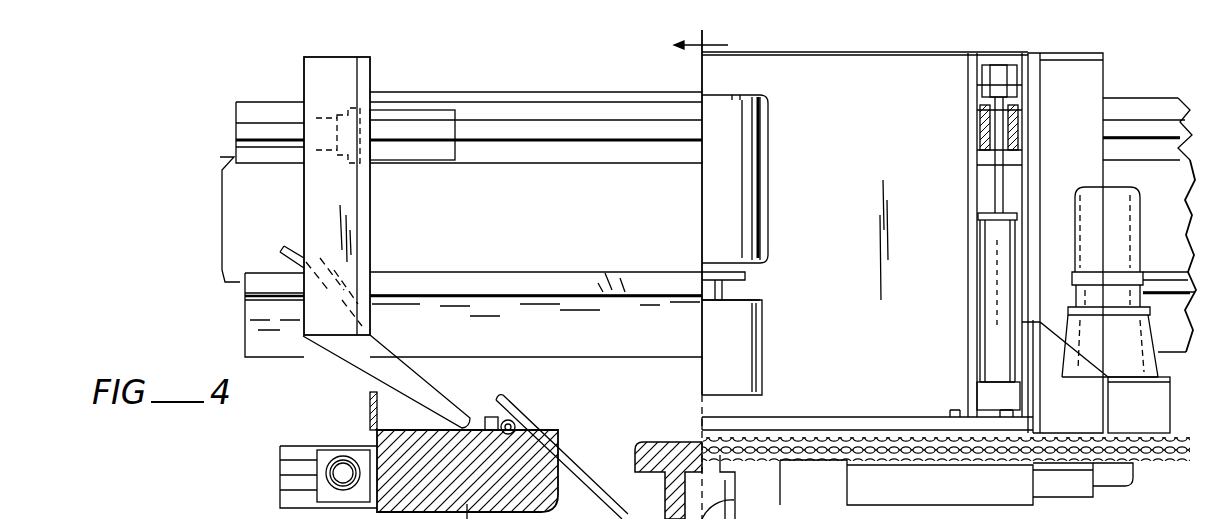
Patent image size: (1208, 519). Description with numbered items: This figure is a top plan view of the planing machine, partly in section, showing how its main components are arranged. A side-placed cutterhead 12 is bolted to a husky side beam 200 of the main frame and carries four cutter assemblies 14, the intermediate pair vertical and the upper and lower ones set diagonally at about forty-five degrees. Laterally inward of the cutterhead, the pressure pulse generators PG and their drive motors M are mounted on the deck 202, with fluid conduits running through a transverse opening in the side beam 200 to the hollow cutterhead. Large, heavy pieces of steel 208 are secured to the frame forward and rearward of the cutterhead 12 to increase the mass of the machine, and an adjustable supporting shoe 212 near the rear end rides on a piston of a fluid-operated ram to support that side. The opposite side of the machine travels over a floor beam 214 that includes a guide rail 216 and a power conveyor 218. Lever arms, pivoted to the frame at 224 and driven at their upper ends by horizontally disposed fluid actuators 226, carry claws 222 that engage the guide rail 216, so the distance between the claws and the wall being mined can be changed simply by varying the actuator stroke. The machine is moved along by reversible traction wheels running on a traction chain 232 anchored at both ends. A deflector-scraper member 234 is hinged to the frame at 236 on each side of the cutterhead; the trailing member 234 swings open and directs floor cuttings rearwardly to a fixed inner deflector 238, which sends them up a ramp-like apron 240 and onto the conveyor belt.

The cutterhead 12 is at (650, 441).
The cutter assemblies 14 is at (742, 518).
The side beam 200 is at (818, 432).
The deck 202 is at (875, 144).
The pieces of steel 208 is at (868, 480).
The adjustable supporting shoe 212 is at (1118, 496).
The floor beam 214 is at (258, 322).
The guide rail 216 is at (250, 124).
The power conveyor 218 is at (222, 196).
The claws 222 is at (450, 161).
The pivot 224 is at (968, 114).
The fluid actuators 226 is at (990, 306).
The traction chain 232 is at (1140, 458).
The deflector-scraper member 234 is at (588, 474).
The hinge connection 236 is at (516, 425).
The fixed inner deflector 238 is at (434, 392).
The ramp-like apron 240 is at (620, 388).
The drive motors M is at (762, 202).
The pressure pulse generators PG is at (754, 322).